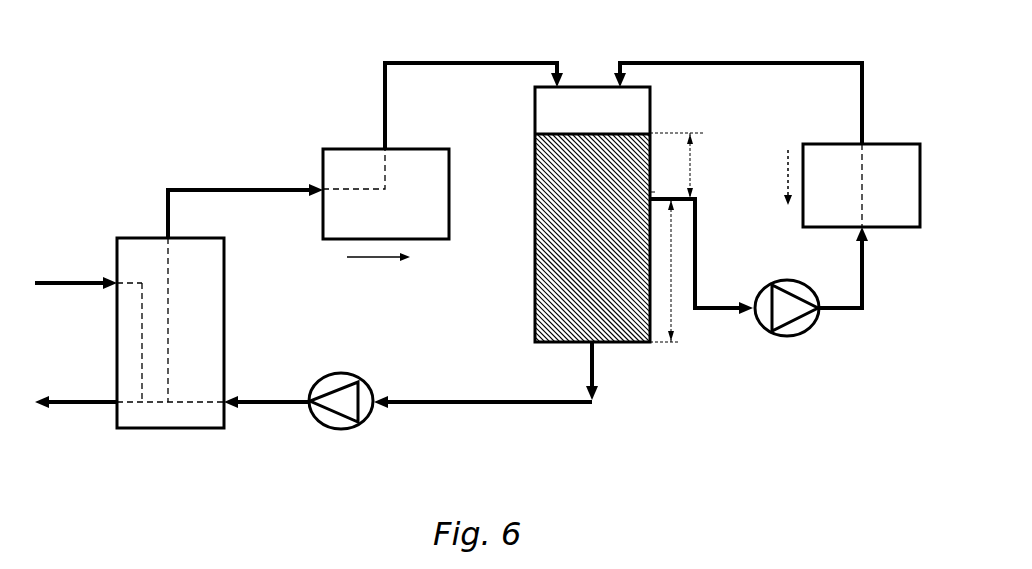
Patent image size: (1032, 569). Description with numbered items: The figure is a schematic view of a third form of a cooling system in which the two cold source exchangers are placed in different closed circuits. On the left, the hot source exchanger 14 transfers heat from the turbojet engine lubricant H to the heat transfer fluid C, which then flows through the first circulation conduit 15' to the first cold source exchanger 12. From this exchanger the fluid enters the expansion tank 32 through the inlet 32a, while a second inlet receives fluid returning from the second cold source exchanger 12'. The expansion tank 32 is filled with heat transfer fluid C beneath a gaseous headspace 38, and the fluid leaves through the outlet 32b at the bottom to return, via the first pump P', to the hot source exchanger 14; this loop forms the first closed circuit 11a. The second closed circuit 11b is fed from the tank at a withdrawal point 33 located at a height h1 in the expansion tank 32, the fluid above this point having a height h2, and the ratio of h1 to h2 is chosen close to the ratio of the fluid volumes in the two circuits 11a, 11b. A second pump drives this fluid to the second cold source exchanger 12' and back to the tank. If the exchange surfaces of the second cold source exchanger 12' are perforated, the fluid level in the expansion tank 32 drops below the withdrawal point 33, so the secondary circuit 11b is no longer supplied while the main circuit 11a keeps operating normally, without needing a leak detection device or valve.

The first closed circuit 11a is at (188, 180).
The second closed circuit 11b is at (760, 52).
The first cold source exchanger 12 is at (369, 169).
The second cold source exchanger 12' is at (847, 166).
The hot source exchanger 14 is at (105, 339).
The first circulation conduit 15' is at (342, 298).
The expansion tank 32 is at (591, 210).
The inlet 32a is at (570, 80).
The outlet 32b is at (598, 352).
The withdrawal point 33 is at (653, 196).
The gaseous headspace 38 is at (553, 110).
The height of the withdrawal point h1 is at (674, 290).
The height of fluid above the withdrawal point h2 is at (705, 165).
The heat transfer fluid C is at (282, 185).
The fluid F is at (372, 262).
The lubricant H is at (65, 280).
The first pump P' is at (341, 376).